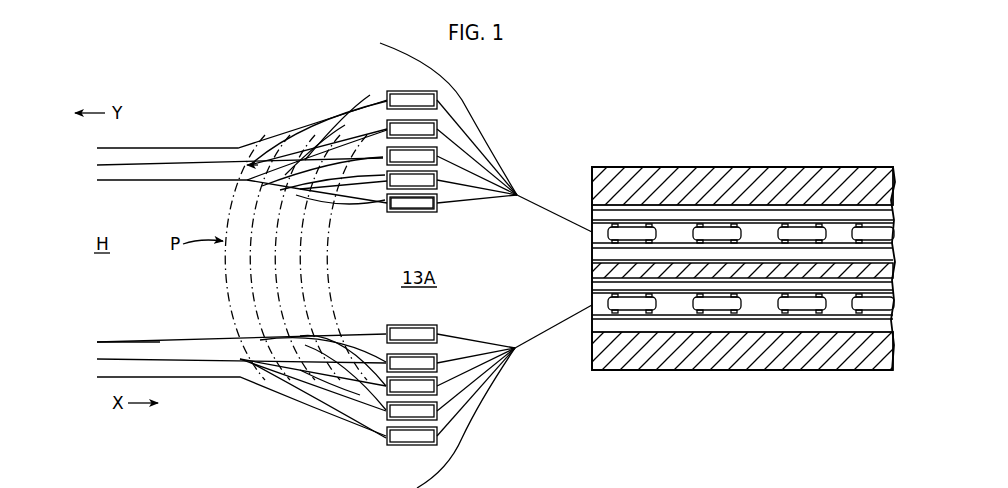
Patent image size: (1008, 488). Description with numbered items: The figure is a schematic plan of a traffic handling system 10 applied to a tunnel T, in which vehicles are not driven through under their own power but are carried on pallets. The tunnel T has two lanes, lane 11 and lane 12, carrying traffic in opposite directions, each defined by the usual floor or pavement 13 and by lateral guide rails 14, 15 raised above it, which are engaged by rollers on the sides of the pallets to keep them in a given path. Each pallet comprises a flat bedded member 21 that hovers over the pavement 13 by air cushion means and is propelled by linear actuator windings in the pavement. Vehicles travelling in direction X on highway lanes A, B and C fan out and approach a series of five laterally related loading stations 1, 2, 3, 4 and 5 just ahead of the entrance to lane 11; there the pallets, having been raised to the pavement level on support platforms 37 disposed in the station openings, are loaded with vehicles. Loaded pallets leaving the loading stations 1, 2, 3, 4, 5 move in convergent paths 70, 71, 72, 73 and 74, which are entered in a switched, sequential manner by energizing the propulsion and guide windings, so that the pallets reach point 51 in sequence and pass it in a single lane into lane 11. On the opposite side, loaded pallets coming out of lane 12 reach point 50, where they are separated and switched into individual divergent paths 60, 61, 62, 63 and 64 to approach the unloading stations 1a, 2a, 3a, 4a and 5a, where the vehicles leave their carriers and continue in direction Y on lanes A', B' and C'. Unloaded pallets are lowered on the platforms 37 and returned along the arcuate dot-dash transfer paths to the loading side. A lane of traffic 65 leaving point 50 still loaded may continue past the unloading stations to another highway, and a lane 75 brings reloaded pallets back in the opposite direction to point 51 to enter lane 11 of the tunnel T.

The loading station 1 is at (384, 438).
The loading station 2 is at (384, 411).
The loading station 3 is at (383, 375).
The loading station 4 is at (383, 351).
The loading station 5 is at (398, 323).
The unloading station 1a is at (405, 89).
The unloading station 2a is at (385, 126).
The unloading station 3a is at (385, 153).
The unloading station 4a is at (328, 188).
The unloading station 5a is at (385, 206).
The traffic handling system 10 is at (250, 413).
The lane 11 is at (586, 342).
The lane 12 is at (580, 189).
The floor or pavement 13 is at (840, 230).
The lateral guide rail 14 is at (592, 248).
The lateral guide rail 15 is at (632, 228).
The flat bedded member 21 is at (717, 232).
The support platform 37 is at (417, 207).
The point 50 is at (516, 198).
The point 51 is at (516, 346).
The divergent path 60 is at (480, 200).
The divergent path 61 is at (510, 177).
The divergent path 62 is at (494, 172).
The divergent path 63 is at (478, 155).
The divergent path 64 is at (466, 130).
The lane of traffic 65 is at (450, 82).
The convergent path 70 is at (472, 340).
The convergent path 71 is at (497, 370).
The convergent path 72 is at (483, 380).
The convergent path 73 is at (475, 398).
The convergent path 74 is at (463, 418).
The lane 75 is at (455, 462).
The lane A is at (241, 324).
The lane B is at (241, 339).
The lane C is at (241, 406).
The lane A' is at (242, 192).
The lane B' is at (240, 135).
The lane C' is at (242, 120).
The tunnel T is at (770, 379).